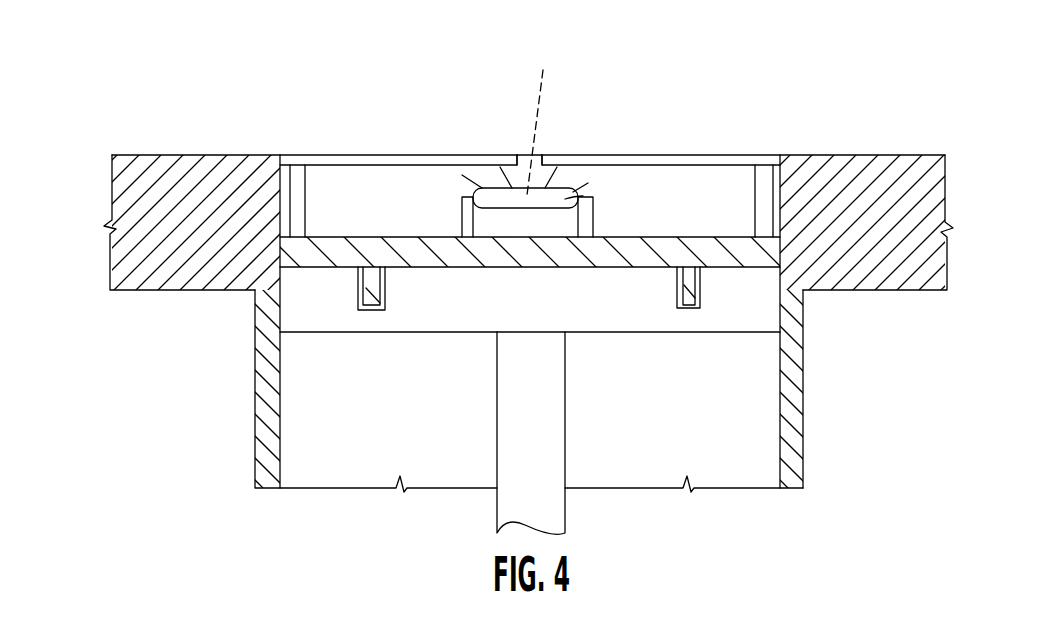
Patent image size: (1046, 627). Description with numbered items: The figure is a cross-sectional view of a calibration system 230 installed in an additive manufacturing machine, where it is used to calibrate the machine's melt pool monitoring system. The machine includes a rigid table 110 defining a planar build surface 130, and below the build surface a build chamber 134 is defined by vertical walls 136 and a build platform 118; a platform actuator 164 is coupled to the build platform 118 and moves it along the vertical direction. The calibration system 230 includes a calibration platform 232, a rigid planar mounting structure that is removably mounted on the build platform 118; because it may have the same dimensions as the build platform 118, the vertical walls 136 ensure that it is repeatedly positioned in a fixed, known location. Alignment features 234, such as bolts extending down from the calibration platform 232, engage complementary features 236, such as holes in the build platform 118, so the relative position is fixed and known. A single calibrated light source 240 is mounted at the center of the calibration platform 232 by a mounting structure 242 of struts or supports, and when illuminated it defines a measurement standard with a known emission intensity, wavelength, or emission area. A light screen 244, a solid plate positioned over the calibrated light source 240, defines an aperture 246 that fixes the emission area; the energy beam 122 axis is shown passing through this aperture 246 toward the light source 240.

The table 110 is at (137, 242).
The build platform 118 is at (553, 311).
The energy beam 122 is at (553, 88).
The planar build surface 130 is at (126, 150).
The build chamber 134 is at (417, 402).
The vertical walls 136 is at (803, 455).
The platform actuator 164 is at (545, 422).
The calibration system 230 is at (349, 110).
The calibration platform 232 is at (710, 248).
The alignment features 234 is at (685, 306).
The complementary features 236 is at (712, 278).
The calibrated light source 240 is at (583, 198).
The mounting structure 242 is at (463, 216).
The light screen 244 is at (635, 162).
The apertures 246 is at (520, 142).